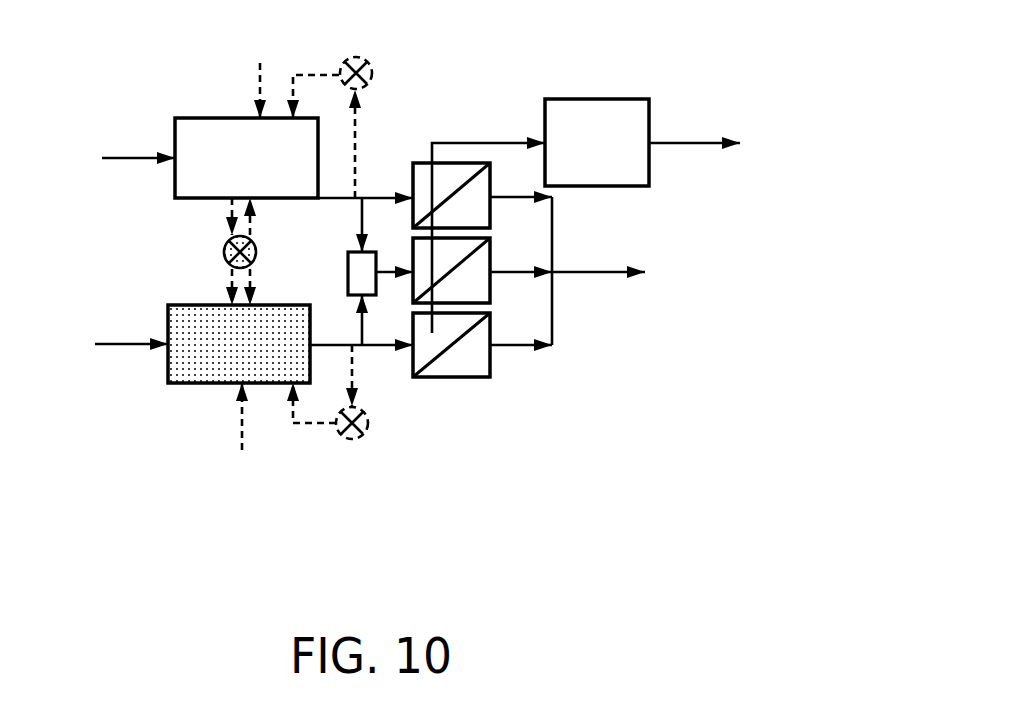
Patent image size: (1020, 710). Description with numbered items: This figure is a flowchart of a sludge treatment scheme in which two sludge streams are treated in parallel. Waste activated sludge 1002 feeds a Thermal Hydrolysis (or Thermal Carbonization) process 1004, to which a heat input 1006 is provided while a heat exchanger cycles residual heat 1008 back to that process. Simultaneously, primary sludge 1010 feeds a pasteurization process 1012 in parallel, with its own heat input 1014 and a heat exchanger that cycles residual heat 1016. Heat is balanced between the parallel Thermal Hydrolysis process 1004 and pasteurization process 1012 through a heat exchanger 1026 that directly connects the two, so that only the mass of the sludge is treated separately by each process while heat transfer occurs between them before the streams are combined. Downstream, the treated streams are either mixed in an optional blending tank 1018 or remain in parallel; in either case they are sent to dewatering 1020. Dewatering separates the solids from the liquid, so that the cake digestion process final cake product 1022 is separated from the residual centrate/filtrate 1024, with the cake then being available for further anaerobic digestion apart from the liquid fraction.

The waste activated sludge 1002 is at (118, 158).
The Thermal Hydrolysis (or Thermal Carbonization) process 1004 is at (175, 198).
The heat input 1006 is at (260, 82).
The heat exchanger cycling residual heat 1008 is at (372, 73).
The primary sludge 1010 is at (103, 345).
The pasteurization process 1012 is at (185, 383).
The heat input 1014 is at (242, 422).
The heat exchanger cycling residual heat 1016 is at (352, 440).
The optional blending tank 1018 is at (393, 355).
The dewatering 1020 is at (487, 377).
The final cake product 1022 is at (740, 143).
The residual centrate/filtrate 1024 is at (632, 278).
The heat exchanger 1026 is at (224, 252).